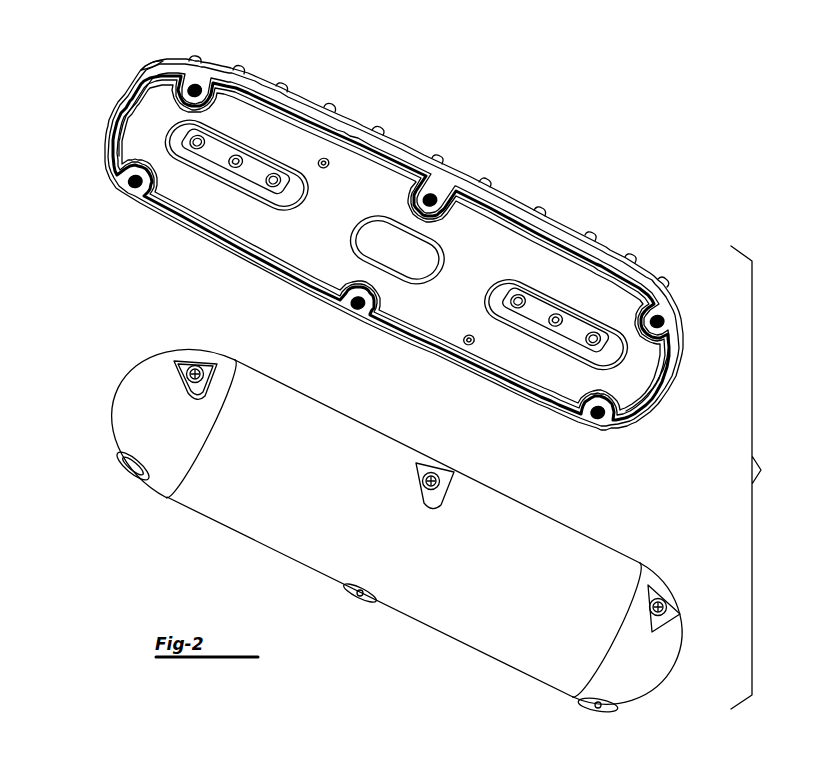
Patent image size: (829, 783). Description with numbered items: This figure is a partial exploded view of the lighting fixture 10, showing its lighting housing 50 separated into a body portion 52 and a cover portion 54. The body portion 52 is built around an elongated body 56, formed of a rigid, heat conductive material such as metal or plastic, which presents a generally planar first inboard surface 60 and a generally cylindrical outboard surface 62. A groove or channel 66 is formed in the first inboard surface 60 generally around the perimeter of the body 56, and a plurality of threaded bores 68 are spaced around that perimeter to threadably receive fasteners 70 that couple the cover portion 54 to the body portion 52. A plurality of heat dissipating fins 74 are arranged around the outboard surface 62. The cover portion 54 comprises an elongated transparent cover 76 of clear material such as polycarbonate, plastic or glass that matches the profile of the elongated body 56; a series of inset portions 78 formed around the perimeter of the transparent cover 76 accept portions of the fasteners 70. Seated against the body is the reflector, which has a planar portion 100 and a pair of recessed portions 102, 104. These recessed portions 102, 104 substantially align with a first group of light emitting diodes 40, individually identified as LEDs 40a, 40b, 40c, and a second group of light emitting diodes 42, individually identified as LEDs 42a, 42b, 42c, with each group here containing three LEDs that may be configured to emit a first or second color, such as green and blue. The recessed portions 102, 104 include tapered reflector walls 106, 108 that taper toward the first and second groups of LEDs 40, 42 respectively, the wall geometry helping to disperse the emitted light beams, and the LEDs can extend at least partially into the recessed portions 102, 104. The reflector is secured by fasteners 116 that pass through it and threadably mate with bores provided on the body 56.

The lighting fixture 10 is at (135, 48).
The first group of light emitting diodes 40 is at (185, 130).
The light emitting diode 40a is at (196, 150).
The light emitting diode 40b is at (236, 167).
The light emitting diode 40c is at (273, 187).
The second group of light emitting diodes 42 is at (610, 360).
The light emitting diode 42a is at (518, 309).
The light emitting diode 42b is at (555, 327).
The light emitting diode 42c is at (593, 345).
The lighting housing 50 is at (658, 198).
The body portion 52 is at (510, 185).
The cover portion 54 is at (288, 562).
The elongated body 56 is at (118, 92).
The first inboard surface 60 is at (638, 267).
The outboard surface 62 is at (437, 157).
The groove or channel 66 is at (487, 228).
The threaded bores 68 is at (200, 86).
The fasteners 70 is at (196, 380).
The heat dissipating fins 74 is at (338, 110).
The transparent cover 76 is at (188, 502).
The inset portions 78 is at (210, 388).
The planar portion 100 is at (323, 266).
The recessed portion 102 is at (178, 158).
The recessed portion 104 is at (620, 344).
The tapered reflector wall 106 is at (288, 200).
The tapered reflector wall 108 is at (495, 315).
The fasteners 116 is at (468, 346).